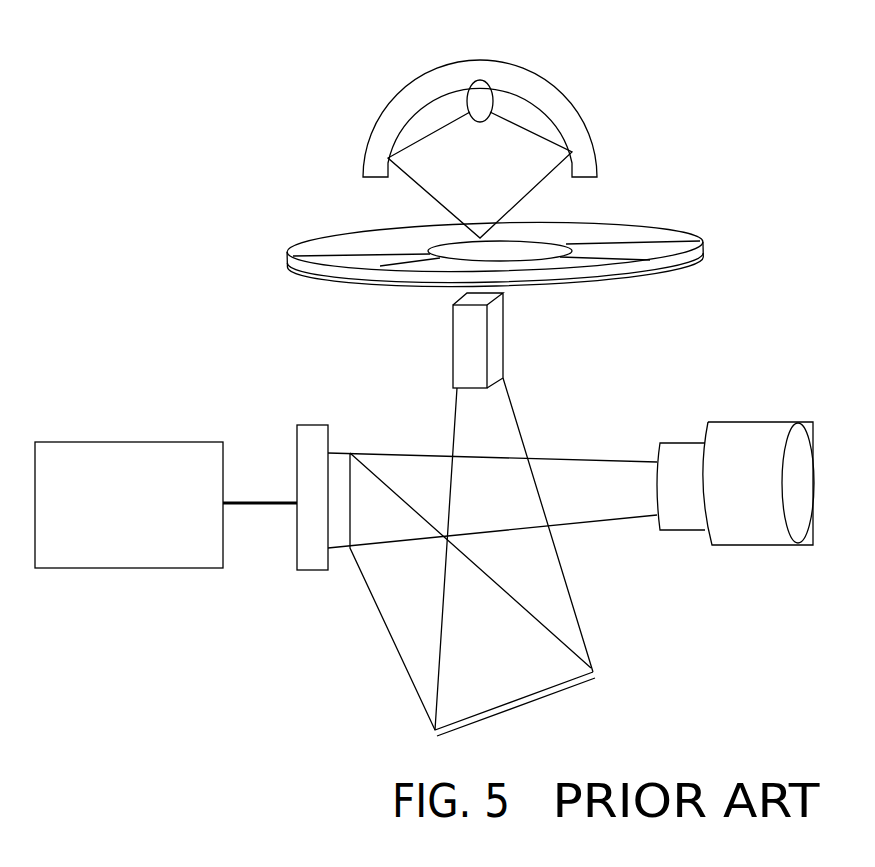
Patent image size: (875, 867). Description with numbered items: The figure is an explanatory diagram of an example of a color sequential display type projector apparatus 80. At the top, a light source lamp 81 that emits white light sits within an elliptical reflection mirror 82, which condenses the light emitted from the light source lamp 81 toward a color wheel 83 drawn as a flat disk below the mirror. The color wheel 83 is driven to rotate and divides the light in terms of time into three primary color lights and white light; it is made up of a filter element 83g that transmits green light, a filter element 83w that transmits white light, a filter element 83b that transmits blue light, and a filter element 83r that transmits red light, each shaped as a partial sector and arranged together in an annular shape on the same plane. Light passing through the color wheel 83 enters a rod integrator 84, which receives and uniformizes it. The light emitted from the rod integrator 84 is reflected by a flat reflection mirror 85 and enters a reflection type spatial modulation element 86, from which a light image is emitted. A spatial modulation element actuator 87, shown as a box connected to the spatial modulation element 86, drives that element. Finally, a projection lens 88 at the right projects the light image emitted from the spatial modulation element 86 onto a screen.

The projector apparatus 80 is at (212, 203).
The light source lamp 81 is at (483, 97).
The elliptical reflection mirror 82 is at (597, 174).
The color wheel 83 is at (552, 254).
The filter element 83g is at (353, 238).
The filter element 83w is at (613, 222).
The filter element 83b is at (643, 253).
The filter element 83r is at (397, 267).
The rod integrator 84 is at (503, 338).
The flat reflection mirror 85 is at (587, 673).
The reflection type spatial modulation element 86 is at (310, 570).
The spatial modulation element actuator 87 is at (79, 570).
The projection lens 88 is at (740, 530).